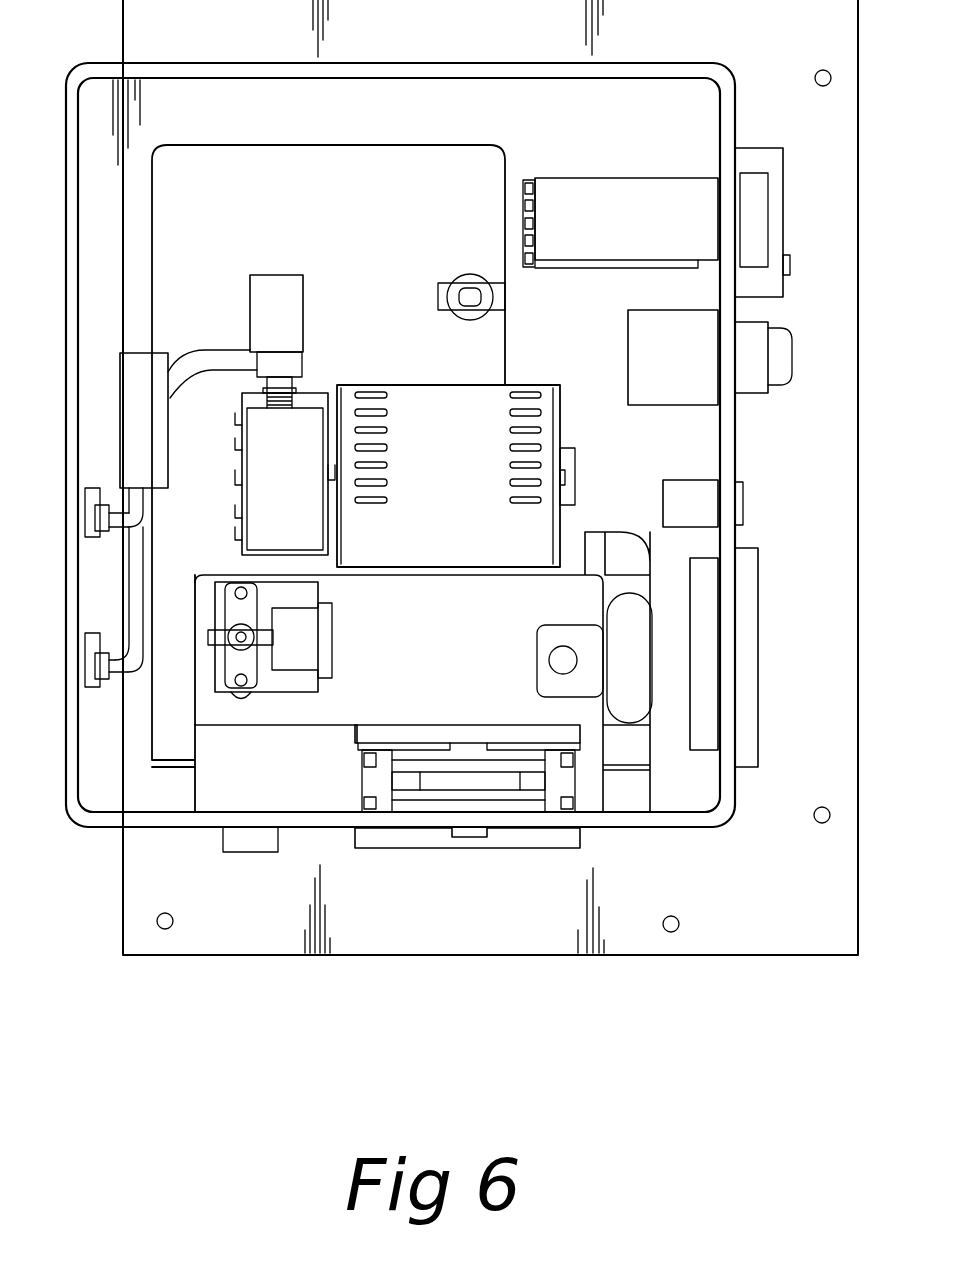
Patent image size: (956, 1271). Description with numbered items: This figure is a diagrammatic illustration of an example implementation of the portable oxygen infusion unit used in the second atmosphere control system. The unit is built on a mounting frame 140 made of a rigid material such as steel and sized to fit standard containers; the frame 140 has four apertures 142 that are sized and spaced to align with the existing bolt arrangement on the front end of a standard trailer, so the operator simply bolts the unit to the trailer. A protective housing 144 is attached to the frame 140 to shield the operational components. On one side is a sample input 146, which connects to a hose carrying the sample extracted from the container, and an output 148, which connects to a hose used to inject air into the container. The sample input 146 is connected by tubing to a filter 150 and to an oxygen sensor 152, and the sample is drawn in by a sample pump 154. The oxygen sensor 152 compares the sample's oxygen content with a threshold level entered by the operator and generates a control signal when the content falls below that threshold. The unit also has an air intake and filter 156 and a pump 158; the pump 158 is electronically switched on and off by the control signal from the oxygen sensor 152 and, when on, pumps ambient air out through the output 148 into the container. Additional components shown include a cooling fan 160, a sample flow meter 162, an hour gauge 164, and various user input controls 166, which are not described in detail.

The mounting frame 140 is at (165, 948).
The apertures 142 is at (828, 70).
The protective housing 144 is at (730, 78).
The sample input 146 is at (88, 497).
The output 148 is at (88, 645).
The filter 150 is at (135, 368).
The oxygen sensor 152 is at (378, 343).
The sample pump 154 is at (325, 648).
The air intake and filter 156 is at (258, 307).
The pump 158 is at (472, 497).
The cooling fan 160 is at (470, 805).
The sample flow meter 162 is at (745, 705).
The hour gauge 164 is at (705, 502).
The user input controls 166 is at (778, 242).